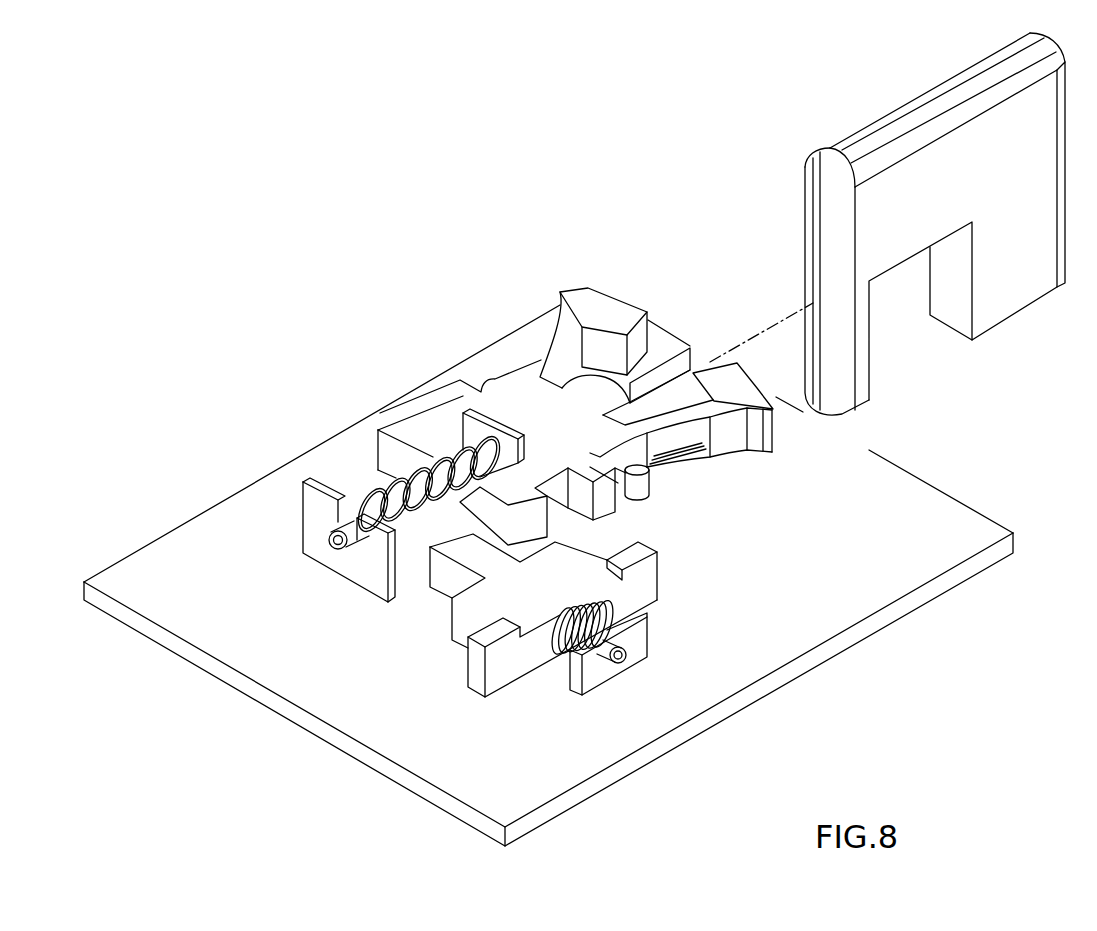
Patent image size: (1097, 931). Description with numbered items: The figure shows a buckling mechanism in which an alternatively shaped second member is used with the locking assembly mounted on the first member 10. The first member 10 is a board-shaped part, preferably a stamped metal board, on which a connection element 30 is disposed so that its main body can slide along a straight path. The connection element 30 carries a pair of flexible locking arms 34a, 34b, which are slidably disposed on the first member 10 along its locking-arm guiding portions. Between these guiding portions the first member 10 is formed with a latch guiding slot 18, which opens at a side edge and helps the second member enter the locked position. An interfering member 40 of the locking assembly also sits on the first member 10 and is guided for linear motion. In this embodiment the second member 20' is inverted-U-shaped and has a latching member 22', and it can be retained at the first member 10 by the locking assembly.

The first member 10 is at (952, 593).
The second member 20' is at (901, 224).
The latching member 22' is at (803, 283).
The connection element 30 is at (558, 422).
The locking arm 34a is at (603, 310).
The latch guiding slot 18 is at (677, 387).
The locking arm 34b is at (730, 385).
The interfering member 40 is at (660, 581).